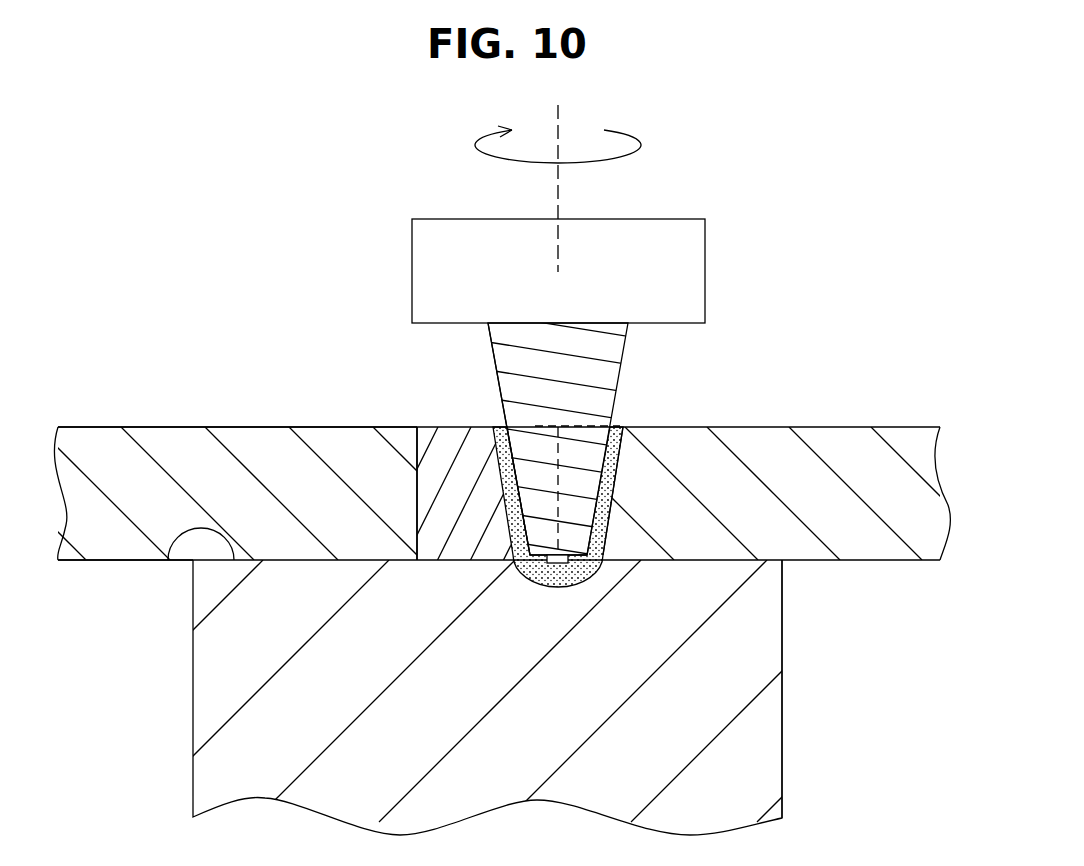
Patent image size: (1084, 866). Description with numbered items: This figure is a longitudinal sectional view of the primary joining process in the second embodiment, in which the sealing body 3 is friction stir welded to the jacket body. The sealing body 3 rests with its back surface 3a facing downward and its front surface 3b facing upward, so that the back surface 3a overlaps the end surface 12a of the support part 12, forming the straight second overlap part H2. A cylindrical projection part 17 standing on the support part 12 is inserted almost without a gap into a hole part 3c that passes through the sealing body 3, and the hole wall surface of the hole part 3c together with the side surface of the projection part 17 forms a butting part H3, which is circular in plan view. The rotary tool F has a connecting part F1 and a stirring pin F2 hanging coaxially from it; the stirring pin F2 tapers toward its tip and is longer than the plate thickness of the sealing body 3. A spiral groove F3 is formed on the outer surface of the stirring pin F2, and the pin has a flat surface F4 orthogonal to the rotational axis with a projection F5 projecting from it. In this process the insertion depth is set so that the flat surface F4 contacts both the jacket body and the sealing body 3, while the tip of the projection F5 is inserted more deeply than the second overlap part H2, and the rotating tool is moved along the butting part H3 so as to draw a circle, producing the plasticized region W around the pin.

The sealing body 3 is at (82, 376).
The back surface 3a is at (112, 562).
The front surface 3b is at (155, 427).
The hole part 3c is at (418, 492).
The support part 12 is at (782, 705).
The end surface 12a is at (168, 562).
The projection part 17 is at (417, 518).
The rotary tool F is at (594, 384).
The connecting part F1 is at (705, 270).
The stirring pin F2 is at (620, 377).
The spiral groove F3 is at (530, 373).
The flat surface F4 is at (585, 577).
The projection F5 is at (540, 585).
The second overlap part H2 is at (803, 576).
The butting part H3 is at (407, 417).
The welded portion W is at (613, 485).